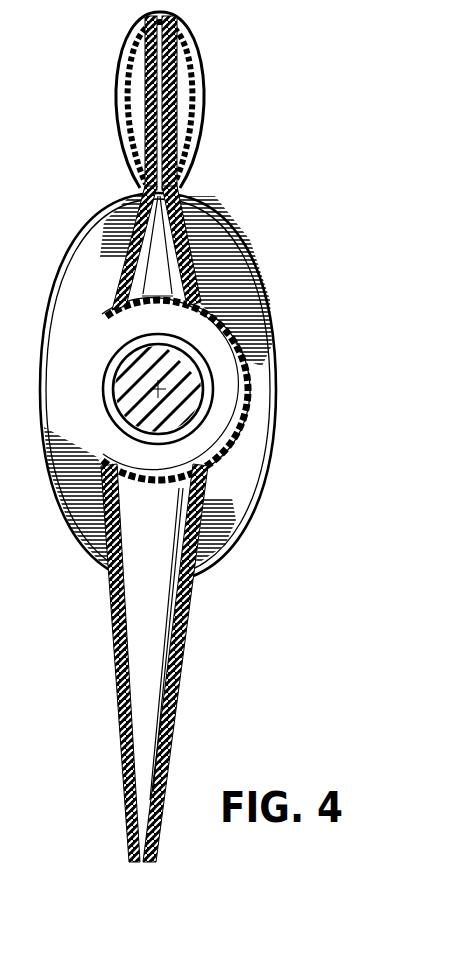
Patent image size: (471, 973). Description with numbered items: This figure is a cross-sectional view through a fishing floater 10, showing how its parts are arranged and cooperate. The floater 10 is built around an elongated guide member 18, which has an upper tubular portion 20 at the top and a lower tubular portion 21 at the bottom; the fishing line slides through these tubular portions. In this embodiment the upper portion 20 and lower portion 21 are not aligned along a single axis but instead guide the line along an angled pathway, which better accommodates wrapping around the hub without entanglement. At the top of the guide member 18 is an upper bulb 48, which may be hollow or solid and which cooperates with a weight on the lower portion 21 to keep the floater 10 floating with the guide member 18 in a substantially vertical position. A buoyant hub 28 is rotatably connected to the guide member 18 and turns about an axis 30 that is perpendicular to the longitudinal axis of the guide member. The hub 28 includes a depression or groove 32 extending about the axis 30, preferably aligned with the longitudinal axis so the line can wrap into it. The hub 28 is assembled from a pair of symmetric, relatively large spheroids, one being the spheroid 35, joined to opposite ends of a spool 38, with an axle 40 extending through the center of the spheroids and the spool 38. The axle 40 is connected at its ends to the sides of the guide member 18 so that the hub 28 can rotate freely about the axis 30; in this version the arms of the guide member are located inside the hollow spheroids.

The floater 10 is at (312, 78).
The guide member 18 is at (185, 177).
The upper tubular portion 20 is at (138, 181).
The lower tubular portion 21 is at (123, 781).
The buoyant hub 28 is at (259, 279).
The axis 30 is at (126, 418).
The depression or groove 32 is at (250, 390).
The spheroid 35 is at (247, 500).
The spool 38 is at (113, 355).
The axle 40 is at (114, 381).
The upper bulb 48 is at (202, 52).